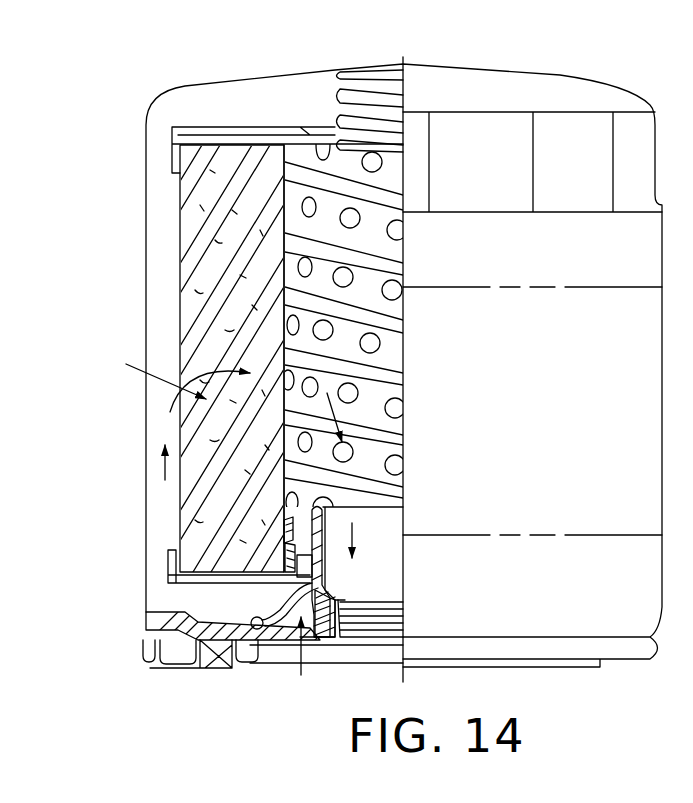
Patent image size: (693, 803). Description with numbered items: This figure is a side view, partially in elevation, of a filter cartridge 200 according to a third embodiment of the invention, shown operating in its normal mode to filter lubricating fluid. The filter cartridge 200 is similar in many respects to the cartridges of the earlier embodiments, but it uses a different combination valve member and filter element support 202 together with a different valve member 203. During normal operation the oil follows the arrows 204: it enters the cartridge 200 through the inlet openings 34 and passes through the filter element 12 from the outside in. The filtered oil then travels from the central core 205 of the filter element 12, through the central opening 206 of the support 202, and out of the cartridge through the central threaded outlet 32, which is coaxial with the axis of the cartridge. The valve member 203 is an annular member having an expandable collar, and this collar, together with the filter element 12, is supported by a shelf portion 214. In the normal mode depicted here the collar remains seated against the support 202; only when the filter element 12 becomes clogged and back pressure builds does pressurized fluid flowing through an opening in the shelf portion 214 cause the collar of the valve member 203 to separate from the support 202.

The filter cartridge 200 is at (370, 60).
The filter element 12 is at (182, 262).
The arrows 204 is at (165, 468).
The central core 205 is at (403, 337).
The valve member 203 is at (292, 520).
The combination valve member and filter element support 202 is at (388, 520).
The central opening 206 is at (368, 568).
The threaded outlet 32 is at (398, 612).
The shelf portion 214 is at (292, 612).
The inlet openings 34 is at (300, 633).